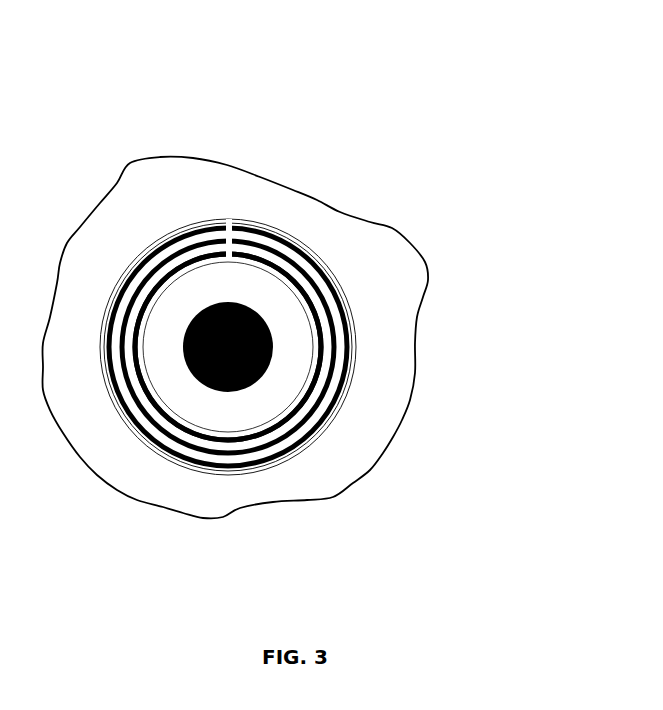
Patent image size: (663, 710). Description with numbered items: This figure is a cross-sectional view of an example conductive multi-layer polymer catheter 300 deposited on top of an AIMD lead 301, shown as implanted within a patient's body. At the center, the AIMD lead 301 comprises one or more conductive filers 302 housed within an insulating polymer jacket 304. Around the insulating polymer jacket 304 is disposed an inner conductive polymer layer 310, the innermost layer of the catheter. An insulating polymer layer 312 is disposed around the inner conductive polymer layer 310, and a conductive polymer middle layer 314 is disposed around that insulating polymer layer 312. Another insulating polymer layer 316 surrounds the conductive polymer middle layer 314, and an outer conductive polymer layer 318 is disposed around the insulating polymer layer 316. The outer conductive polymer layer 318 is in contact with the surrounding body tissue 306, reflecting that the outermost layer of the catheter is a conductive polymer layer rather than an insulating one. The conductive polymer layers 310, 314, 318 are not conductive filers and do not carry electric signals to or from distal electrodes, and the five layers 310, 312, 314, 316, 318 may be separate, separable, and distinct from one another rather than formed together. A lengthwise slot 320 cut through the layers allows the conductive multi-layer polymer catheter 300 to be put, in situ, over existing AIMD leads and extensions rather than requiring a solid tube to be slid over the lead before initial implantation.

The conductive multi-layer polymer catheter 300 is at (309, 315).
The AIMD lead 301 is at (180, 425).
The conductive filers 302 is at (262, 380).
The insulating polymer jacket 304 is at (253, 422).
The tissue 306 is at (313, 493).
The inner conductive polymer layer 310 is at (322, 370).
The insulating polymer layer 312 is at (328, 323).
The conductive polymer middle layer 314 is at (328, 282).
The insulating polymer layer 316 is at (302, 248).
The outer conductive polymer layer 318 is at (258, 223).
The slot 320 is at (227, 222).